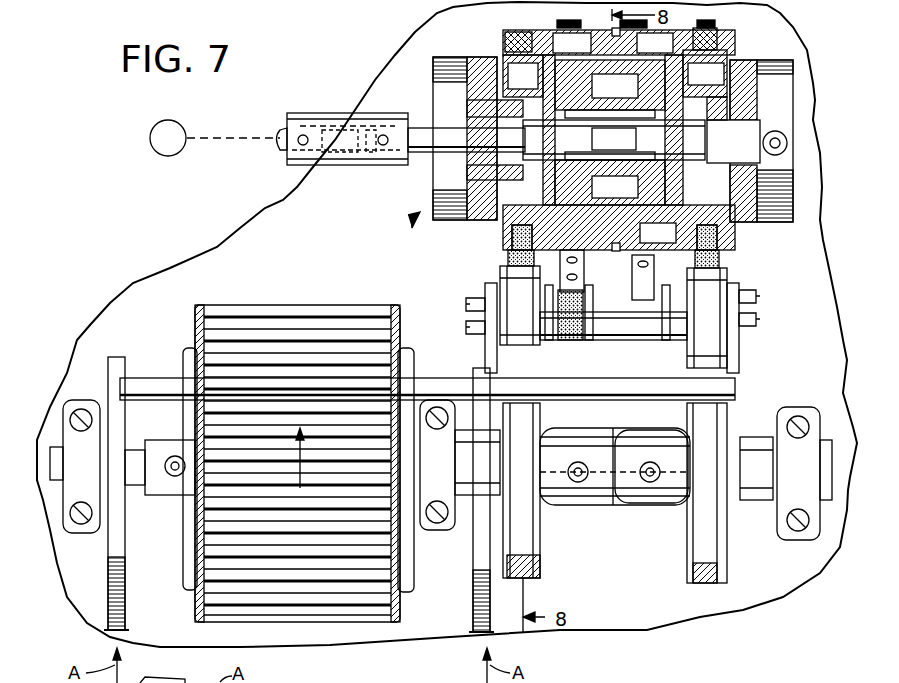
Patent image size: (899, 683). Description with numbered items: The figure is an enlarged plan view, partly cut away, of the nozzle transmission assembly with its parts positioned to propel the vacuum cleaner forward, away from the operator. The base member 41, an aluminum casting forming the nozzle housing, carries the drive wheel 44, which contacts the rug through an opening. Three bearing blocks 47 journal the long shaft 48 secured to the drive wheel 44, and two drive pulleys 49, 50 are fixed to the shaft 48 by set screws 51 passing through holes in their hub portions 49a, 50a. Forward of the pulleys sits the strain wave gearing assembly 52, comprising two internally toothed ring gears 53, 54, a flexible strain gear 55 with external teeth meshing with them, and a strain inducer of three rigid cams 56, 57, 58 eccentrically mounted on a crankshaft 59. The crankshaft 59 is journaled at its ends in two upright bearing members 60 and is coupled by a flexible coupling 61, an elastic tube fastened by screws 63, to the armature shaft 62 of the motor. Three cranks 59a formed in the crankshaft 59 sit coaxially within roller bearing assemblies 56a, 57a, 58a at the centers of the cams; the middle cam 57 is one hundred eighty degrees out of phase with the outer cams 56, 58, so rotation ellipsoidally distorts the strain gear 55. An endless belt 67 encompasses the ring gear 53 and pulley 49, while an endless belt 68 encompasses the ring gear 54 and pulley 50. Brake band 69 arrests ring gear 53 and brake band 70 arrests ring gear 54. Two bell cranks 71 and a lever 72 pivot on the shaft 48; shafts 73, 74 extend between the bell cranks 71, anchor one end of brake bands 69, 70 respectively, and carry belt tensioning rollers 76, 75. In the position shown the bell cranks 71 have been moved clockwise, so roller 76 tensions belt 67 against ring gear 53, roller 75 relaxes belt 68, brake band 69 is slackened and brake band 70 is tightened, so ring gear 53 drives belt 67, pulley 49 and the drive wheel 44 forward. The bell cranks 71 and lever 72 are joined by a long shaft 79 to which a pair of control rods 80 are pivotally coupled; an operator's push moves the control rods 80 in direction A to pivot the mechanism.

The base member 41 is at (218, 248).
The drive wheel 44 is at (302, 310).
The bearing blocks 47 is at (80, 405).
The long shaft 48 is at (54, 448).
The drive pulley 49 is at (542, 565).
The hub portion 49a is at (575, 445).
The drive pulley 50 is at (690, 565).
The hub portion 50a is at (640, 445).
The set screw 51 is at (578, 484).
The strain wave gearing assembly 52 is at (406, 232).
The ring gear 53 is at (552, 31).
The ring gear 54 is at (722, 245).
The strain gear 55 is at (628, 70).
The cam 56 is at (550, 78).
The roller bearing assembly 56a is at (620, 158).
The cam 57 is at (572, 43).
The roller bearing assembly 57a is at (620, 112).
The cam 58 is at (672, 80).
The roller bearing assembly 58a is at (705, 133).
The crankshaft 59 is at (412, 128).
The cranks 59a is at (655, 136).
The upright bearing members 60 is at (452, 62).
The flexible coupling 61 is at (350, 112).
The armature shaft 62 is at (280, 150).
The screws 63 is at (303, 135).
The endless belt 67 is at (510, 32).
The endless belt 68 is at (714, 30).
The brake band 69 is at (584, 358).
The brake band 70 is at (676, 30).
The bell cranks 71 is at (482, 355).
The lever 72 is at (104, 357).
The shaft 73 is at (612, 328).
The shaft 74 is at (598, 298).
The belt tensioning roller 75 is at (715, 290).
The belt tensioning roller 76 is at (505, 283).
The long shaft 79 is at (145, 378).
The control rods 80 is at (125, 578).